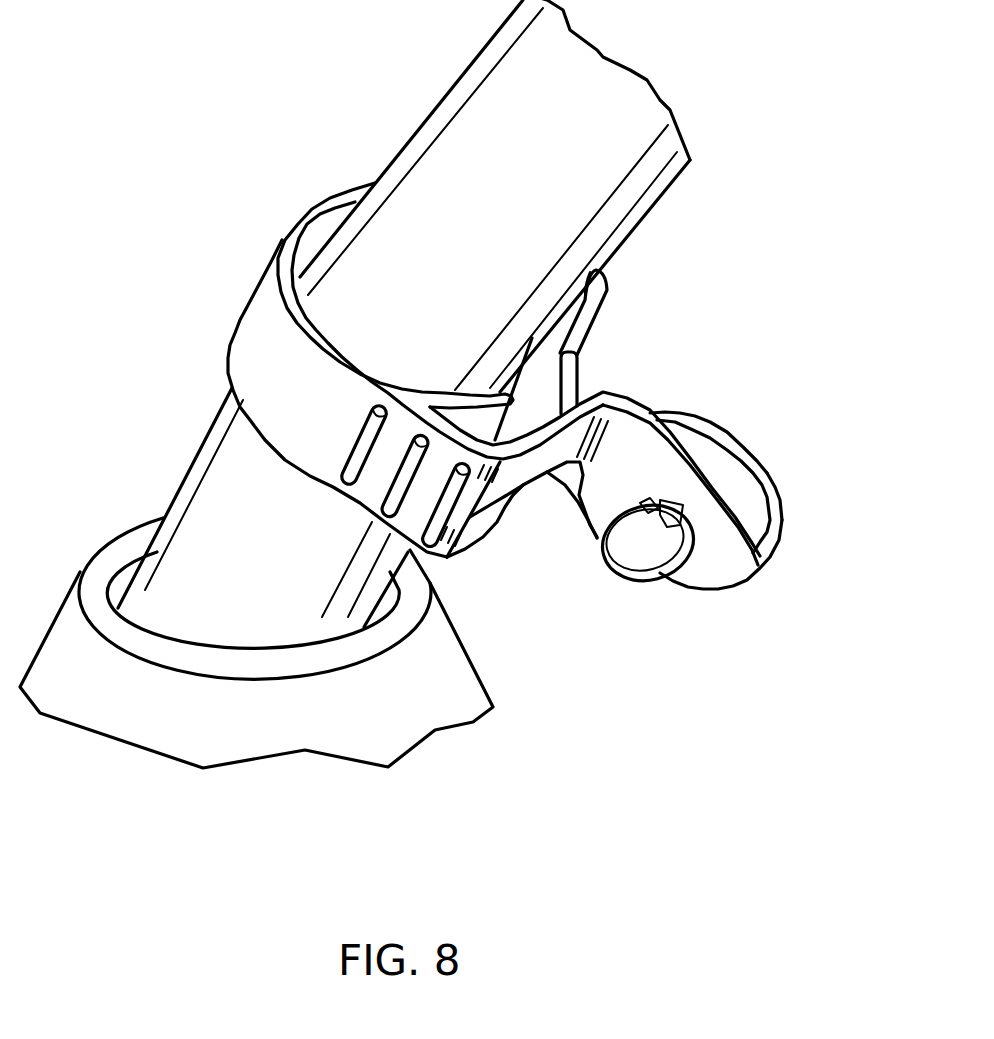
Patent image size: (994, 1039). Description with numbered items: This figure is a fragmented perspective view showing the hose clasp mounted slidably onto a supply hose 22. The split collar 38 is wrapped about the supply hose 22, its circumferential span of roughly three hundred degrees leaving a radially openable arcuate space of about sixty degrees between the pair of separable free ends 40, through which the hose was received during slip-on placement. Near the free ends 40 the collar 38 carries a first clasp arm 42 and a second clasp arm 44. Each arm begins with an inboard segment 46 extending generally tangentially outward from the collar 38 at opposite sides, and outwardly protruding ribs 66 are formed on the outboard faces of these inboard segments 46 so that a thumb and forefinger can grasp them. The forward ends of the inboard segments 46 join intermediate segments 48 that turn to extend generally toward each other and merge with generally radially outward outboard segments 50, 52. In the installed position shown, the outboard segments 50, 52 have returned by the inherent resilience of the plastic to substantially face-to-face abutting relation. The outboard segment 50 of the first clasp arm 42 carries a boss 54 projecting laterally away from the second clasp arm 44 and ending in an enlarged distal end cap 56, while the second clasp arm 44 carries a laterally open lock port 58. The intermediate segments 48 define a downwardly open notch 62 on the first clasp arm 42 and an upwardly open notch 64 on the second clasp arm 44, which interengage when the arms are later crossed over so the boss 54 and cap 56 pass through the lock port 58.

The supply hose 22 is at (404, 313).
The split collar 38 is at (415, 354).
The free ends 40 is at (532, 357).
The first clasp arm 42 is at (556, 515).
The second clasp arm 44 is at (630, 336).
The inboard segment 46 is at (441, 495).
The intermediate segments 48 is at (594, 487).
The outboard segment 50 is at (718, 517).
The outboard segment 52 is at (763, 490).
The boss 54 is at (668, 497).
The distal end cap 56 is at (649, 569).
The lock port 58 is at (720, 455).
The downwardly open notch 62 is at (522, 564).
The upwardly open notch 64 is at (632, 312).
The ribs 66 is at (390, 508).